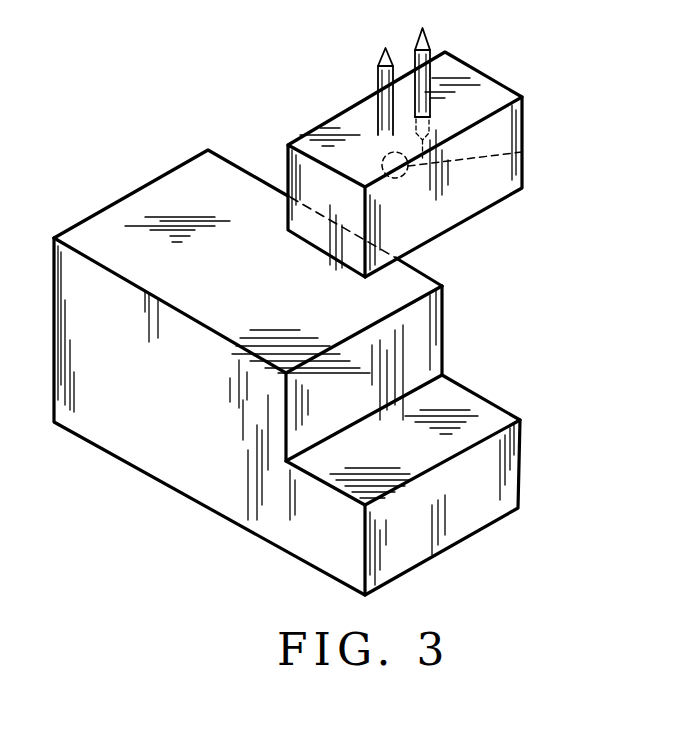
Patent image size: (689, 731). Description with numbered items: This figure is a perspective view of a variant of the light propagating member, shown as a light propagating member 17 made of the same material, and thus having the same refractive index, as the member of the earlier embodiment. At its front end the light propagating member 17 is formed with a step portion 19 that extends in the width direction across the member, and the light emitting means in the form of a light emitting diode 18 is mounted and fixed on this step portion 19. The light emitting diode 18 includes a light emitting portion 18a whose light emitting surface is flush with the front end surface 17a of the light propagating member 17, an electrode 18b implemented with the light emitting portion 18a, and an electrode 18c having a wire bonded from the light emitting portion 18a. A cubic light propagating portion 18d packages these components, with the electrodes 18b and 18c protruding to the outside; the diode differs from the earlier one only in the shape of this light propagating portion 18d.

The light propagating member 17 is at (130, 222).
The front end surface 17a is at (497, 455).
The light emitting diode 18 is at (328, 118).
The light emitting portion 18a is at (522, 152).
The electrode 18b is at (378, 73).
The electrode 18c is at (430, 70).
The light propagating portion 18d is at (287, 167).
The step portion 19 is at (447, 395).